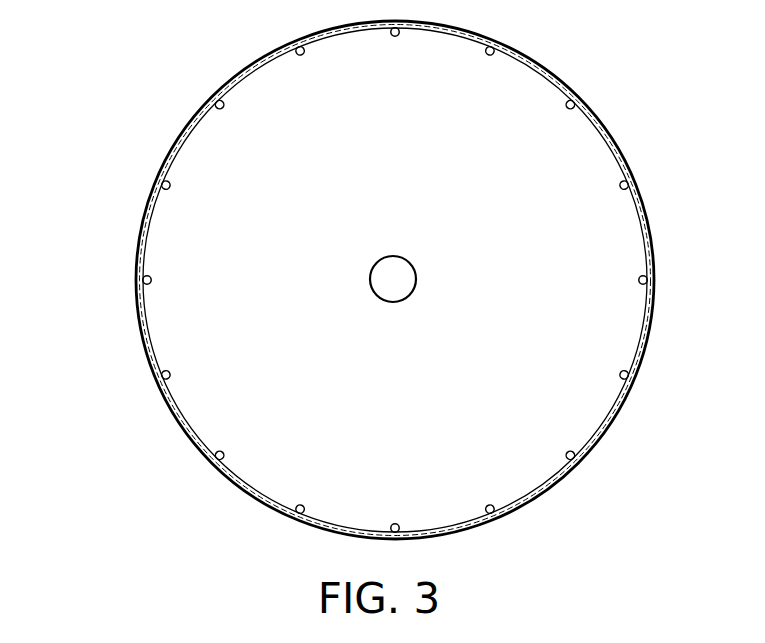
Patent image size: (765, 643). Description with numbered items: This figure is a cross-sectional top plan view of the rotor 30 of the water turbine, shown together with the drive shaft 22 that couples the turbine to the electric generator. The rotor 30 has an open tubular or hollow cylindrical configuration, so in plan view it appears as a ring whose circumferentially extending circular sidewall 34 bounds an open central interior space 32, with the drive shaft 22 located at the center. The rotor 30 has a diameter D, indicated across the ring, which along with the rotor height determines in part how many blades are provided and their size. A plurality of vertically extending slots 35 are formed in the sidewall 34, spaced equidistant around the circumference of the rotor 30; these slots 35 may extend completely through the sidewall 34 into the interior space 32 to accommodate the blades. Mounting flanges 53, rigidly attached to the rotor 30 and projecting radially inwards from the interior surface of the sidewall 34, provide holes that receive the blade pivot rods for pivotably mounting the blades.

The rotor 30 is at (218, 38).
The central interior space 32 is at (162, 234).
The sidewall 34 is at (178, 425).
The slots 35 is at (118, 280).
The mounting flange 53 is at (605, 173).
The drive shaft 22 is at (368, 279).
The diameter D is at (443, 51).